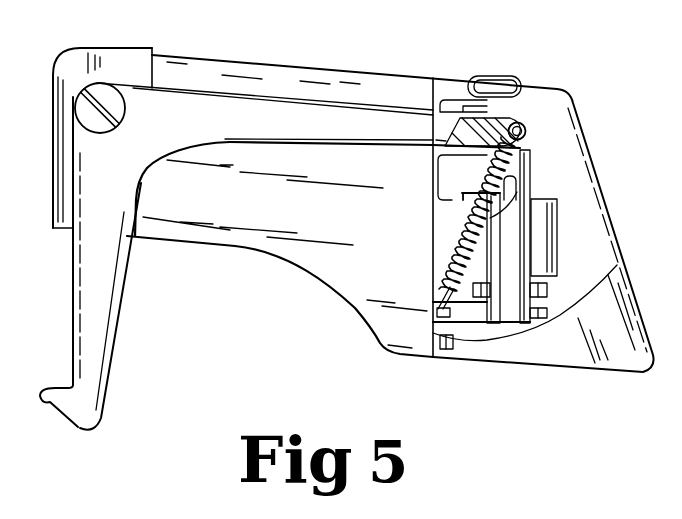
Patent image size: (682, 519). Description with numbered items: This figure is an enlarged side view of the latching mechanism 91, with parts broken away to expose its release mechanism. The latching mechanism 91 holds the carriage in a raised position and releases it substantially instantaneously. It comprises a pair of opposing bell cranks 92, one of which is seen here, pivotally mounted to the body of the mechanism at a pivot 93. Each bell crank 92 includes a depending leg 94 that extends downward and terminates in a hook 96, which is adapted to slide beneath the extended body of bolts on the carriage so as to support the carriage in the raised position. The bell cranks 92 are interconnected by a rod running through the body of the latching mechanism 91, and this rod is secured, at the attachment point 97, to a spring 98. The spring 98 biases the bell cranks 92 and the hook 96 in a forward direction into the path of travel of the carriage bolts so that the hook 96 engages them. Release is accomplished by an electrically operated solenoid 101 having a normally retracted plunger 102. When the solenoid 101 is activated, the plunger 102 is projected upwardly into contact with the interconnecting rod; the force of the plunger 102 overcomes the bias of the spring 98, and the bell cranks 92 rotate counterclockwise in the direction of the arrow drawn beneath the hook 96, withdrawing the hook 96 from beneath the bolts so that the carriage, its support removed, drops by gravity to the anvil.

The latching mechanism 91 is at (157, 55).
The bell crank 92 is at (73, 265).
The pivot 93 is at (72, 107).
The depending leg 94 is at (104, 298).
The hook 96 is at (299, 134).
The spring attachment point 97 is at (521, 133).
The spring 98 is at (448, 263).
The solenoid 101 is at (555, 233).
The plunger 102 is at (508, 172).